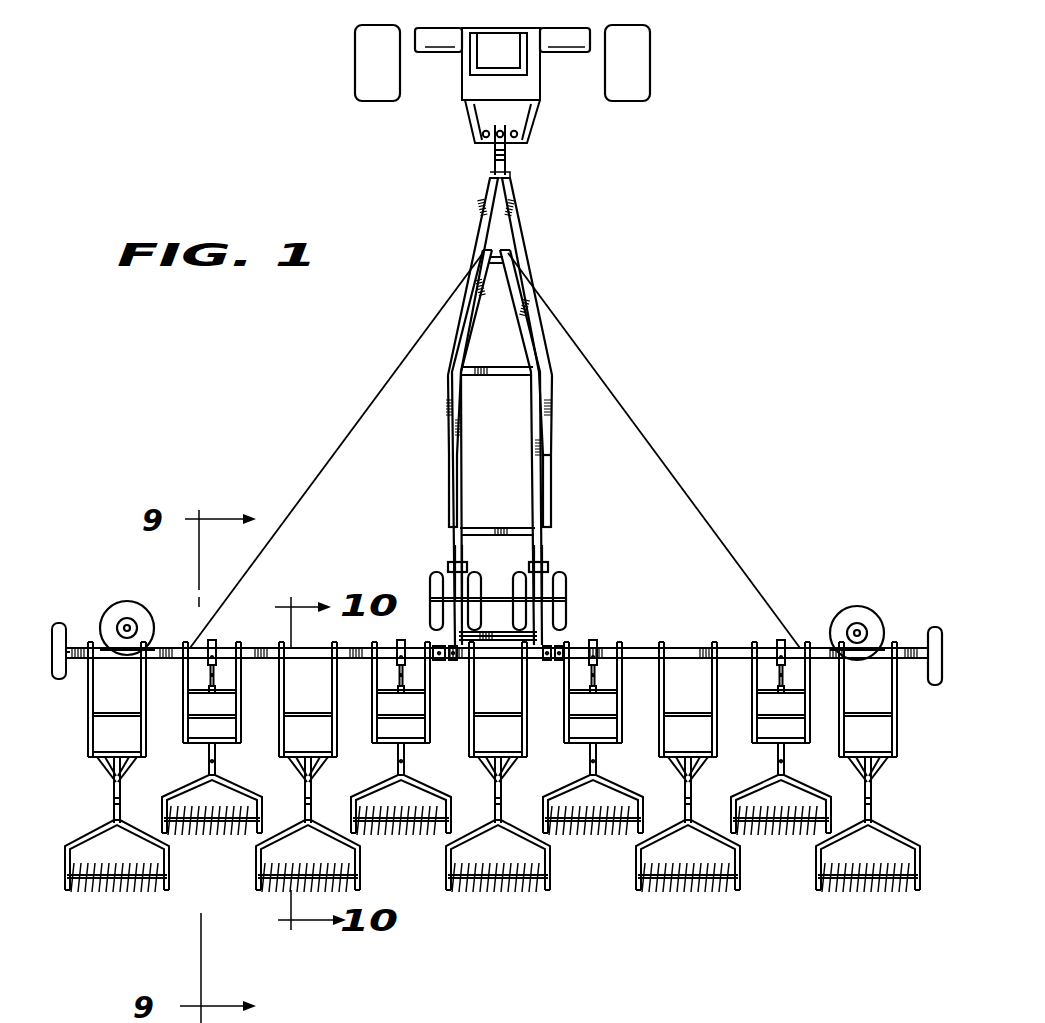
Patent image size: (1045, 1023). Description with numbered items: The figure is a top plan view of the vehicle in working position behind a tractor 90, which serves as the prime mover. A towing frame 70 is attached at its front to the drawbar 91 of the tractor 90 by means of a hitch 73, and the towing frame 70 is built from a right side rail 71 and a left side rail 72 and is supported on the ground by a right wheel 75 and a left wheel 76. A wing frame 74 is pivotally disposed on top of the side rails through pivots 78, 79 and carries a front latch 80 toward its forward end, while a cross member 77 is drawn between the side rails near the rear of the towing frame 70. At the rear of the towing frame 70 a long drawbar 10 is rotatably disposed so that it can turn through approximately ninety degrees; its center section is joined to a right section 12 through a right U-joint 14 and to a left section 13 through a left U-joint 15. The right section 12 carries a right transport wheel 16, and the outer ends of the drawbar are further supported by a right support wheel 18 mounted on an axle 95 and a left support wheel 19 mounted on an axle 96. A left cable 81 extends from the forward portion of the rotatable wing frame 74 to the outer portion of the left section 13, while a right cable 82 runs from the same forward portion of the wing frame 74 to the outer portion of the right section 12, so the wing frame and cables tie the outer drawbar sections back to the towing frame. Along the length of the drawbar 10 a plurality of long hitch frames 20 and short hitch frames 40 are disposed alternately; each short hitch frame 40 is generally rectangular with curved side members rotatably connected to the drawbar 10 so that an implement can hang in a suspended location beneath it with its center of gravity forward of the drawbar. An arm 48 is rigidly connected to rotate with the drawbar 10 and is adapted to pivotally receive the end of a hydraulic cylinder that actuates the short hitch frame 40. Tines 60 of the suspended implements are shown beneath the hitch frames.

The drawbar 10 is at (641, 628).
The right section 12 is at (680, 647).
The left section 13 is at (262, 647).
The right U-joint 14 is at (558, 645).
The left U-joint 15 is at (442, 660).
The right transport wheel 16 is at (860, 607).
The right support wheel 18 is at (940, 622).
The left support wheel 19 is at (152, 603).
The long hitch frame 20 is at (58, 622).
The short hitch frame 40 is at (222, 757).
The arm 48 is at (768, 647).
The tines 60 is at (188, 878).
The towing frame 70 is at (567, 376).
The right side rail 71 is at (552, 545).
The left side rail 72 is at (450, 558).
The hitch 73 is at (505, 157).
The wing frame 74 is at (550, 462).
The right wheel 75 is at (577, 567).
The left wheel 76 is at (472, 552).
The cross member 77 is at (498, 632).
The pivot 78 is at (550, 517).
The pivot 79 is at (445, 512).
The front latch 80 is at (540, 228).
The left cable 81 is at (355, 425).
The right cable 82 is at (697, 502).
The tractor 90 is at (662, 51).
The drawbar of tractor 91 is at (530, 126).
The axle 95 is at (915, 635).
The axle 96 is at (72, 647).